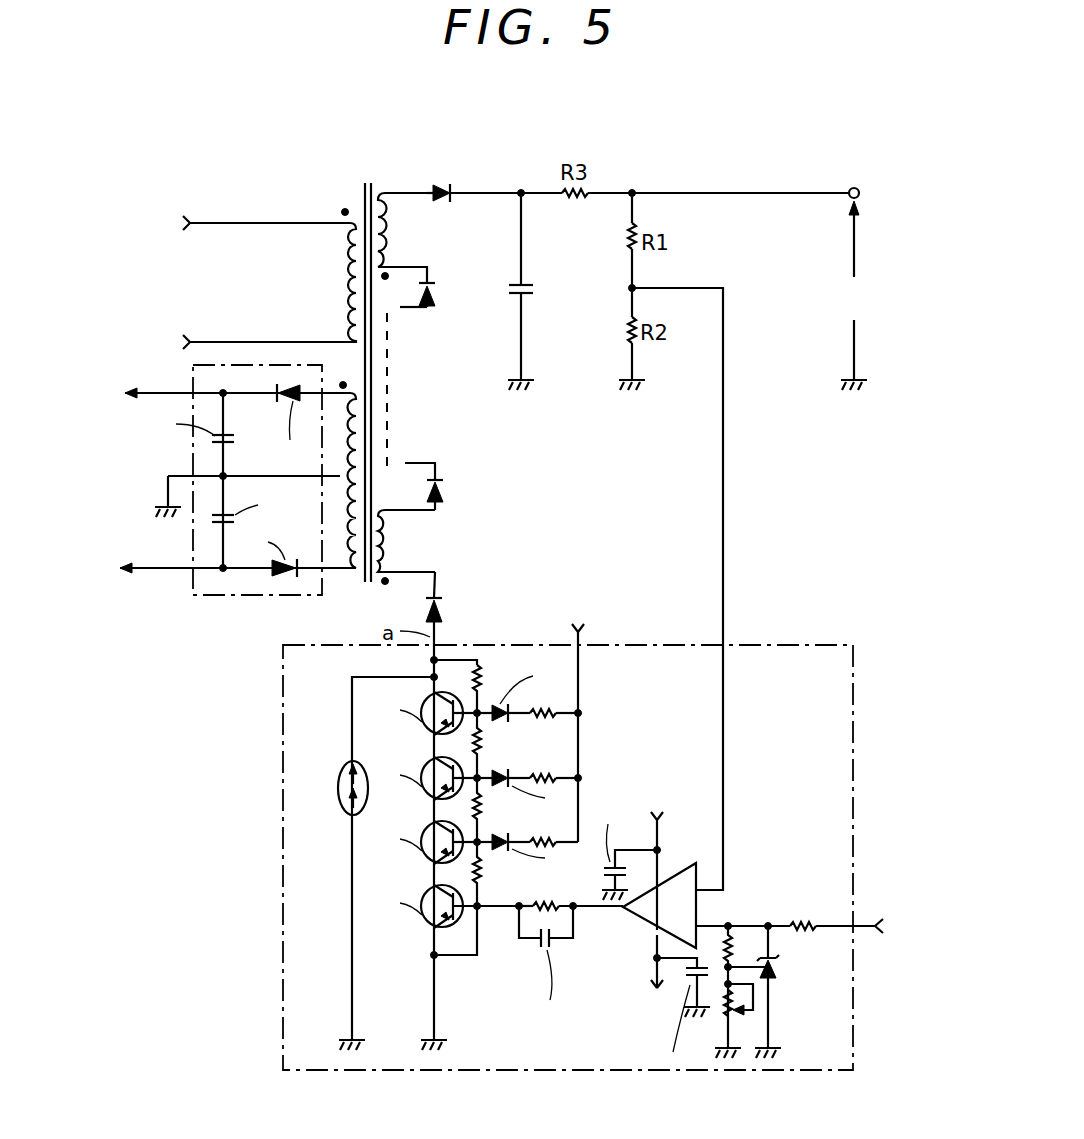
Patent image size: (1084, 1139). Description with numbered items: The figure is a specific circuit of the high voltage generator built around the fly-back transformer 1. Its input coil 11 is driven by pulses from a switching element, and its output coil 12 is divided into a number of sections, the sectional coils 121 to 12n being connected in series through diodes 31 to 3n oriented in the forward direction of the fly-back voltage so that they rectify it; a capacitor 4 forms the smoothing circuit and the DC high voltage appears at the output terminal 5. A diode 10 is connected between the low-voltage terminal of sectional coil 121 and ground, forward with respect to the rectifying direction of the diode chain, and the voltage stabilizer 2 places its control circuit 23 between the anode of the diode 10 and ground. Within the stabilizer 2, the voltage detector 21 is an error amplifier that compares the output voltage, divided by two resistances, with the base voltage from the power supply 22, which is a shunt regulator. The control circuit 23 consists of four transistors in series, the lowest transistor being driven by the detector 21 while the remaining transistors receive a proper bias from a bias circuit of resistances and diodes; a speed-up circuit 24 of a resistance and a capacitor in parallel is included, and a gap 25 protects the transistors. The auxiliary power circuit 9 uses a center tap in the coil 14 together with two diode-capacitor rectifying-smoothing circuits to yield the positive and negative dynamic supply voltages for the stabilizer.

The fly-back transformer 1 is at (378, 172).
The device for stabilizing voltage 2 is at (790, 648).
The diode 3n is at (437, 186).
The capacitor 4 is at (534, 291).
The output terminal 5 is at (857, 188).
The auxiliary power circuit 9 is at (223, 598).
The diode 10 is at (444, 612).
The input coil 11 is at (340, 283).
The output coil 12 is at (408, 402).
The sectional coil 12n is at (392, 223).
The coil for auxiliary power supply 14 is at (340, 560).
The device for detecting voltage 21 is at (648, 912).
The power supply of a base voltage 22 is at (781, 988).
The control circuit 23 is at (596, 729).
The circuit for speed-up 24 is at (518, 952).
The gap 25 is at (340, 812).
The diode 31 is at (443, 492).
The sectional coil 121 is at (400, 540).